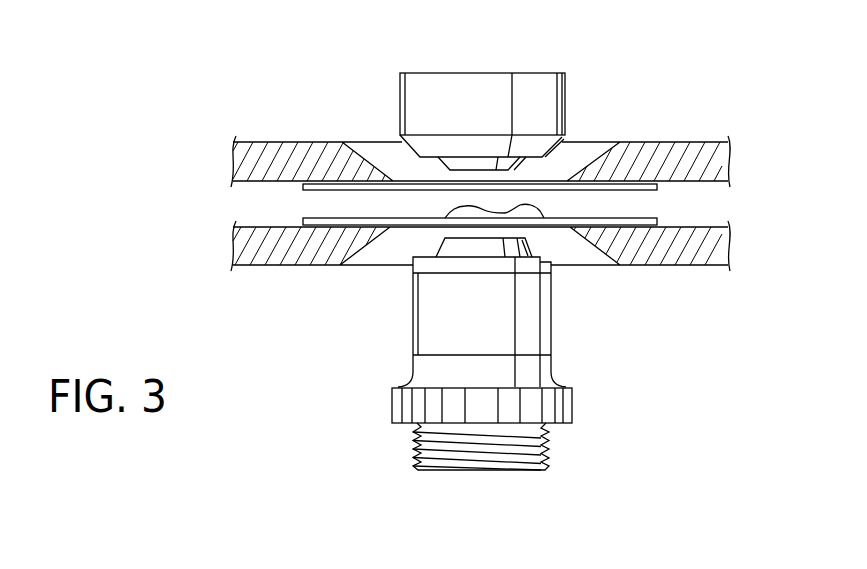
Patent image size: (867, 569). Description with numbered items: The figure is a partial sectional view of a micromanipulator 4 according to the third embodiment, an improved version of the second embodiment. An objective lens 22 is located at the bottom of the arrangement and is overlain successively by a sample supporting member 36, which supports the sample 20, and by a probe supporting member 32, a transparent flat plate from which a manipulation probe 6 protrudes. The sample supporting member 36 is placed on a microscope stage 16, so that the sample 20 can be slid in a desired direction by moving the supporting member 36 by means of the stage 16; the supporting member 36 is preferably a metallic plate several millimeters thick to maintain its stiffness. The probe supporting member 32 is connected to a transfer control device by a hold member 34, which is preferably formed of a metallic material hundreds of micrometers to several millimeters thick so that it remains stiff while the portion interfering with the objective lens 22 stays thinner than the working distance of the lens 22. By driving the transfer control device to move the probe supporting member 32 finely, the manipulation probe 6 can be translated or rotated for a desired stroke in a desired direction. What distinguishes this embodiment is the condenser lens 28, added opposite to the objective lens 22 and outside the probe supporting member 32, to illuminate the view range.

The micromanipulator 4 is at (398, 160).
The manipulation probe 6 is at (500, 189).
The microscope stage 16 is at (700, 267).
The sample 20 is at (533, 213).
The objective lens 22 is at (412, 336).
The condenser lens 28 is at (567, 110).
The probe supporting member 32 is at (535, 178).
The hold member 34 is at (697, 141).
The sample supporting member 36 is at (418, 226).